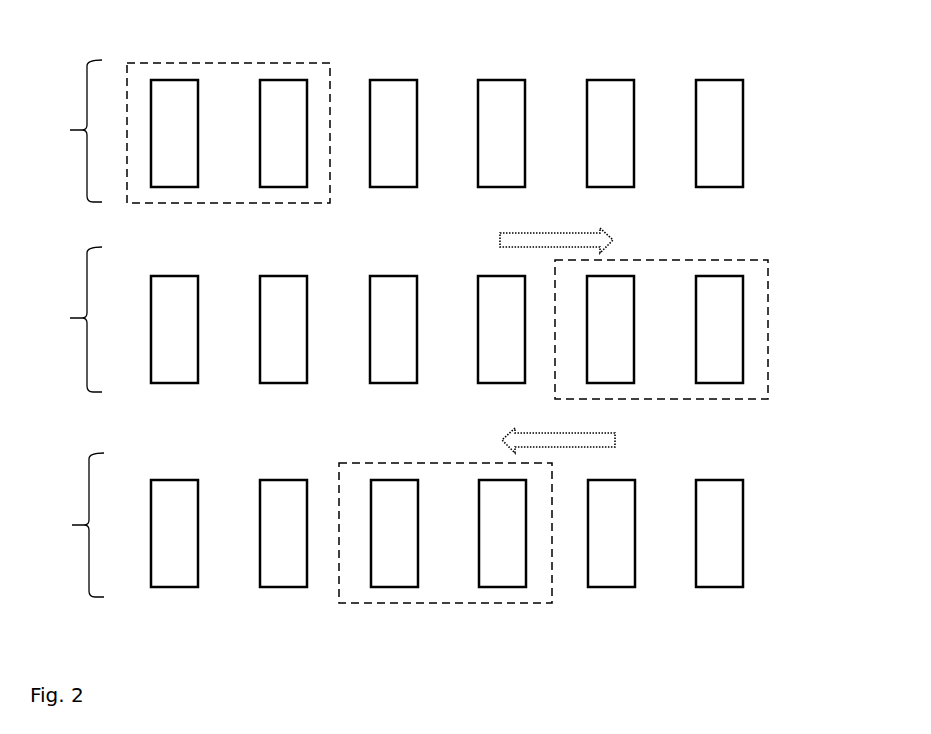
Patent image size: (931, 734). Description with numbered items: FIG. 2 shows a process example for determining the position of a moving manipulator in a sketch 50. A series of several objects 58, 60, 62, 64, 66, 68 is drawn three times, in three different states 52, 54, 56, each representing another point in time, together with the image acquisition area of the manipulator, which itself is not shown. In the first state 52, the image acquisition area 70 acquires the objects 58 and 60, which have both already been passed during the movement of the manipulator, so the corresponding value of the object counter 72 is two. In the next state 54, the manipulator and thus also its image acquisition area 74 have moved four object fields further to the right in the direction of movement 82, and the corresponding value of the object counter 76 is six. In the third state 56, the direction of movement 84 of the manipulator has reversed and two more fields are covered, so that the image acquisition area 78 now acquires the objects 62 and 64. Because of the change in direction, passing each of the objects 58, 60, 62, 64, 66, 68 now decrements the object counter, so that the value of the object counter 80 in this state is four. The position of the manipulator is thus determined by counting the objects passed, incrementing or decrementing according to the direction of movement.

The sketch 50 is at (481, 331).
The first state 52 is at (91, 172).
The second state 54 is at (89, 364).
The third state 56 is at (90, 559).
The object 58 is at (198, 80).
The object 60 is at (308, 80).
The object 62 is at (417, 80).
The object 64 is at (524, 80).
The object 66 is at (633, 80).
The object 68 is at (741, 80).
The image acquisition area 70 is at (328, 100).
The object counter 72 is at (347, 199).
The image acquisition area 74 is at (685, 260).
The object counter 76 is at (783, 397).
The image acquisition area 78 is at (445, 463).
The object counter 80 is at (565, 602).
The direction of movement 82 is at (577, 240).
The direction of movement 84 is at (558, 440).